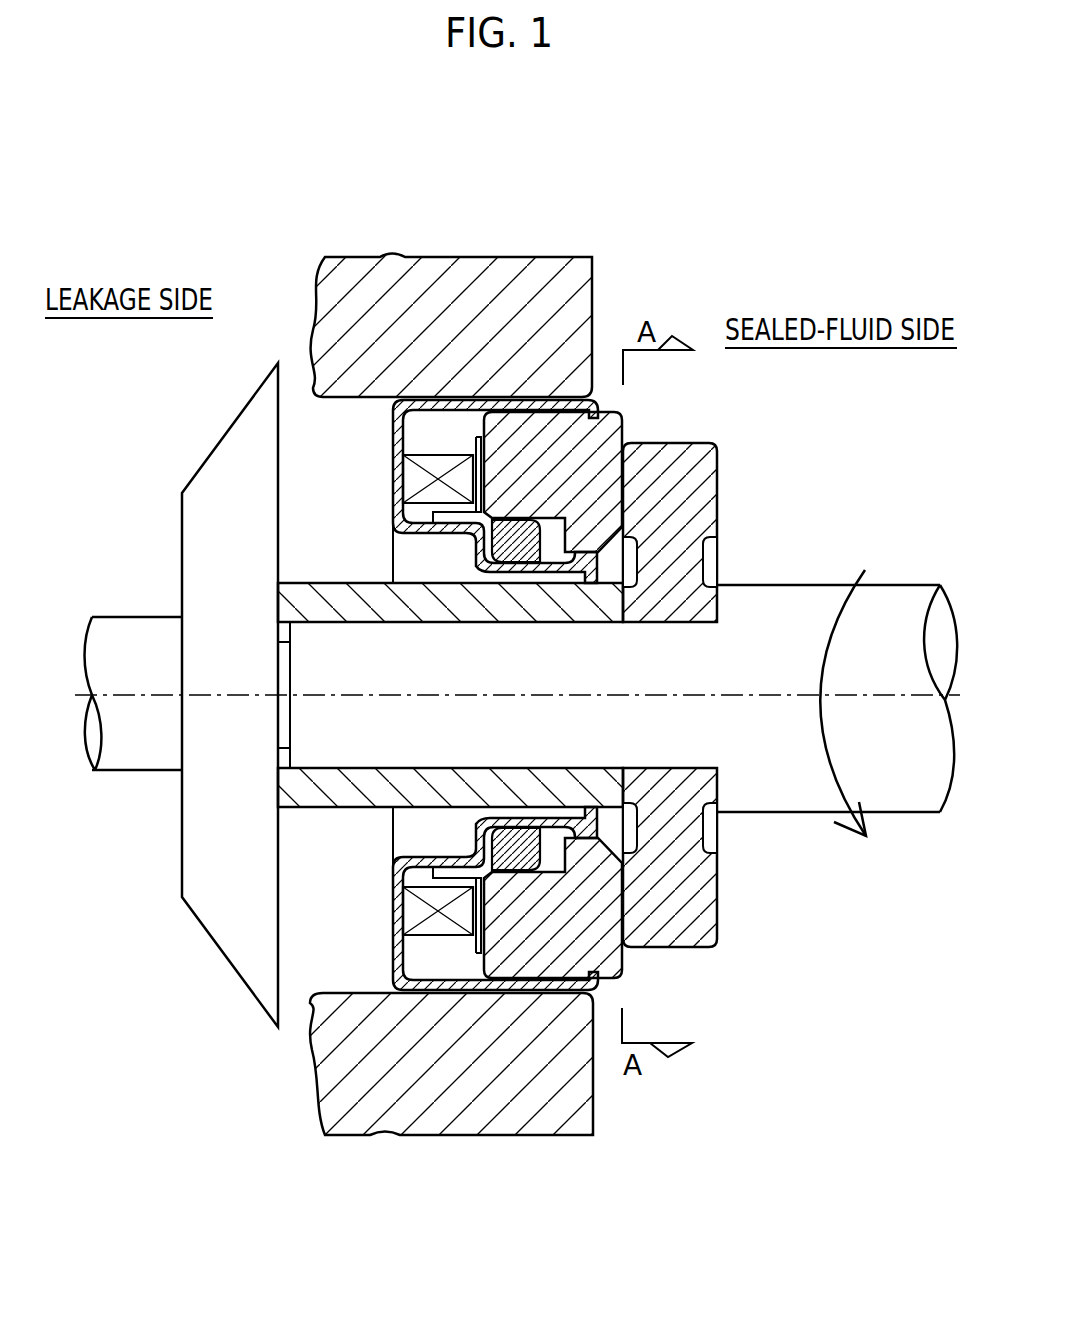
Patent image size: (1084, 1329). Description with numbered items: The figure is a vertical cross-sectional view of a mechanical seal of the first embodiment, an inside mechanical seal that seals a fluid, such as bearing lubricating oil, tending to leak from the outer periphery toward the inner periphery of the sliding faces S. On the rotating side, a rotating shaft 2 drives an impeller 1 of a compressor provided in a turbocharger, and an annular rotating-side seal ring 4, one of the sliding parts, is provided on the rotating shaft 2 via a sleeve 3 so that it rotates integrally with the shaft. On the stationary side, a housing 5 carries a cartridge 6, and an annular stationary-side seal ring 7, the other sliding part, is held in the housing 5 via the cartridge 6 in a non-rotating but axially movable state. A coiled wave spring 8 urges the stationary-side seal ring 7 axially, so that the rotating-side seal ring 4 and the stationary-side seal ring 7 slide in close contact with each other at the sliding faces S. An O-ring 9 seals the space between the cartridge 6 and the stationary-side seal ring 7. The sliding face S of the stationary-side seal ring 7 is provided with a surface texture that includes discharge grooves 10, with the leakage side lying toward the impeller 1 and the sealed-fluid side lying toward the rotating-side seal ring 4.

The impeller 1 is at (220, 487).
The rotating shaft 2 is at (576, 679).
The sleeve 3 is at (307, 597).
The rotating-side seal ring 4 is at (713, 472).
The housing 5 is at (427, 285).
The cartridge 6 is at (393, 450).
The stationary-side seal ring 7 is at (570, 440).
The coiled wave spring 8 is at (440, 467).
The O-ring 9 is at (492, 547).
The discharge grooves 10 is at (645, 470).
The sliding faces S is at (610, 460).